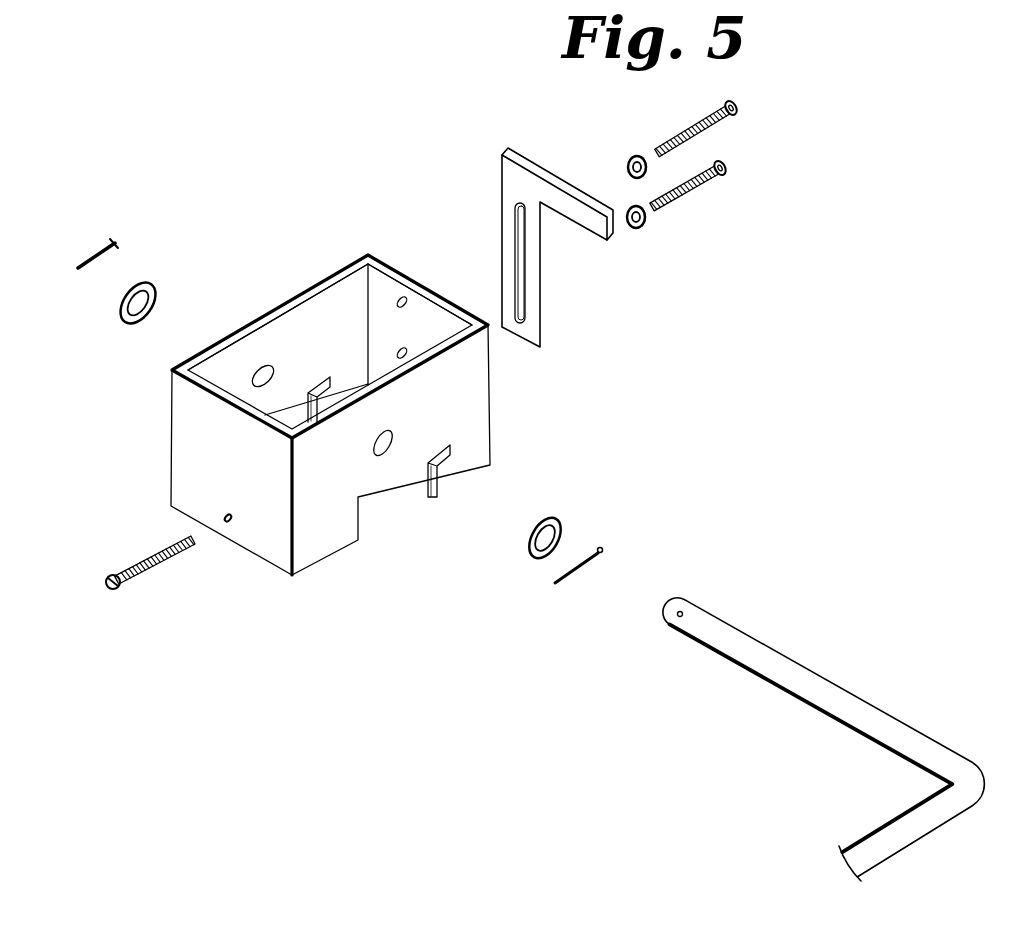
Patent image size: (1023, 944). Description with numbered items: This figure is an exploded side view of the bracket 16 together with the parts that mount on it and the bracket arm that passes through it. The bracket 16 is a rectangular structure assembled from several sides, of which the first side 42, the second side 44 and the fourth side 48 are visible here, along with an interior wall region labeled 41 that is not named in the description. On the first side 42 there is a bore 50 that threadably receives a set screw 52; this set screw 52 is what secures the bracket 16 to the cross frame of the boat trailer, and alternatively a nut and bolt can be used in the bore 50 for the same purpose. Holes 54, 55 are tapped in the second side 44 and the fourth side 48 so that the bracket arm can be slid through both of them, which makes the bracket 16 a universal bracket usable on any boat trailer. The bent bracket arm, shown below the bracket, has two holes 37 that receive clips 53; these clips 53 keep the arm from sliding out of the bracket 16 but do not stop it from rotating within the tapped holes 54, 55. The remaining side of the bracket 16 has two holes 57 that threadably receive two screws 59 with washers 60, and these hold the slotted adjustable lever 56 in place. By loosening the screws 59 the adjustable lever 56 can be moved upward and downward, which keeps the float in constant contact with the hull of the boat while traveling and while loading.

The bracket 16 is at (362, 567).
The holes 37 is at (687, 607).
The rear wall 41 is at (437, 323).
The first side 42 is at (182, 462).
The second side 44 is at (227, 353).
The fourth side 48 is at (452, 390).
The bore 50 is at (227, 524).
The set screw 52 is at (157, 552).
The clip 53 is at (97, 253).
The hole 54 is at (391, 449).
The hole 55 is at (267, 363).
The adjustable lever 56 is at (570, 187).
The holes 57 is at (402, 349).
The screws 59 is at (756, 165).
The washers 60 is at (637, 153).